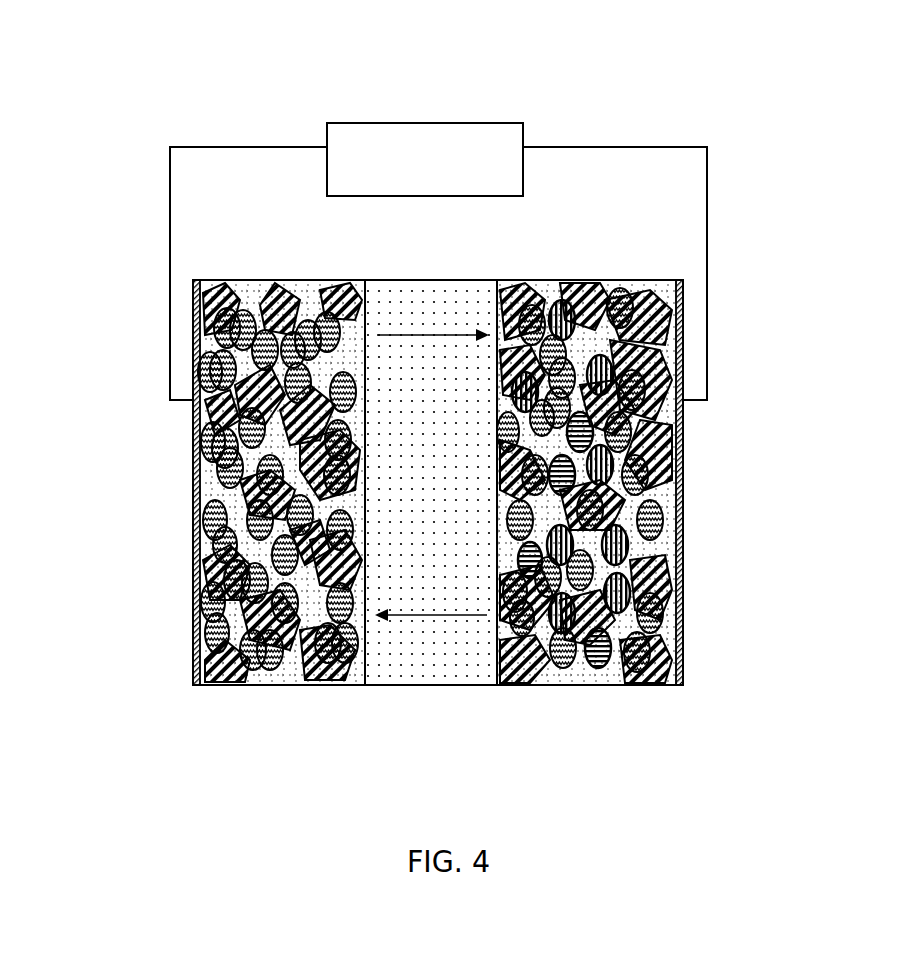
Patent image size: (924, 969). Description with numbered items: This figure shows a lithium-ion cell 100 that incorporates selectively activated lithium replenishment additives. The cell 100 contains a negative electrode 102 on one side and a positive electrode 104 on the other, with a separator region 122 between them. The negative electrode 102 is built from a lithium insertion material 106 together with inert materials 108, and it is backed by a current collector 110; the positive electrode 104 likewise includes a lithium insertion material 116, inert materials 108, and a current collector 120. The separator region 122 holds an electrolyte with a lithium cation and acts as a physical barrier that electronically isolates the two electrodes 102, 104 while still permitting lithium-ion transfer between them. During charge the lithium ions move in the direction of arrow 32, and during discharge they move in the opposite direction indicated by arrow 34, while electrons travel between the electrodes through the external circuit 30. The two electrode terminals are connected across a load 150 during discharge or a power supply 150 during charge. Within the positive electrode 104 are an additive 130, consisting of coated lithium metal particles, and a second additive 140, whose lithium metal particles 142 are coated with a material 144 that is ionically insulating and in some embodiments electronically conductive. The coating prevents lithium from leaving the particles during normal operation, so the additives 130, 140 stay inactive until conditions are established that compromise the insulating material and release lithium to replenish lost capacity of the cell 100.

The load / power supply 150 is at (472, 123).
The external circuit 30 is at (656, 147).
The cell 100 is at (808, 288).
The negative electrode 102 is at (125, 378).
The positive electrode 104 is at (770, 682).
The lithium insertion material 106 is at (205, 285).
The lithium insertion material 116 is at (652, 295).
The inert materials 108 is at (200, 570).
The current collector 110 is at (196, 645).
The current collector 120 is at (683, 522).
The separator region 122 is at (405, 686).
The additive 130 is at (673, 456).
The second additive 140 is at (620, 648).
The lithium metal particles 142 is at (597, 668).
The coating material 144 is at (622, 666).
The arrow (discharge direction) 34 is at (405, 335).
The arrow (charge direction) 32 is at (455, 620).